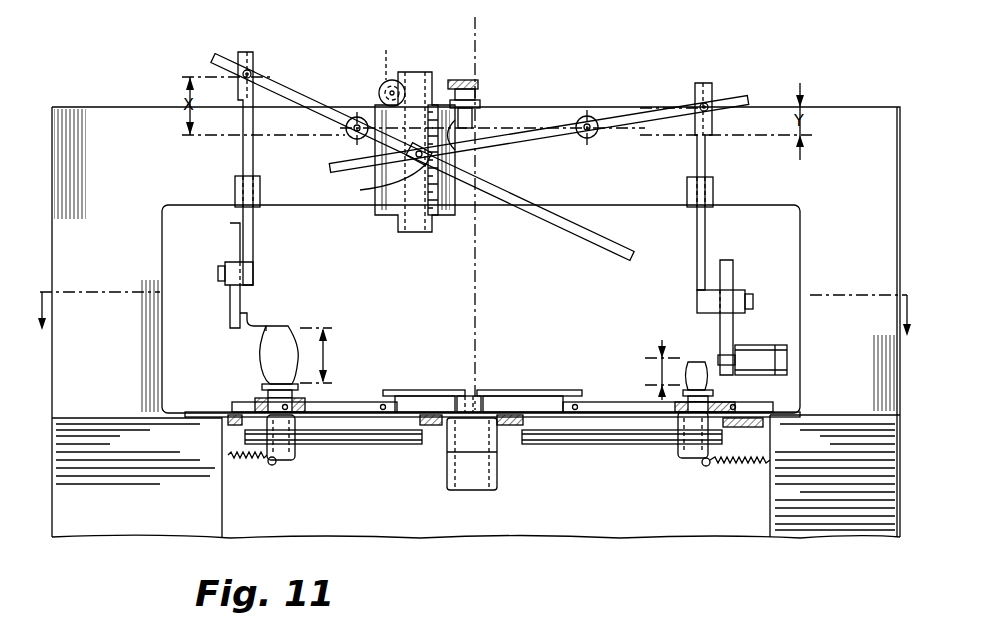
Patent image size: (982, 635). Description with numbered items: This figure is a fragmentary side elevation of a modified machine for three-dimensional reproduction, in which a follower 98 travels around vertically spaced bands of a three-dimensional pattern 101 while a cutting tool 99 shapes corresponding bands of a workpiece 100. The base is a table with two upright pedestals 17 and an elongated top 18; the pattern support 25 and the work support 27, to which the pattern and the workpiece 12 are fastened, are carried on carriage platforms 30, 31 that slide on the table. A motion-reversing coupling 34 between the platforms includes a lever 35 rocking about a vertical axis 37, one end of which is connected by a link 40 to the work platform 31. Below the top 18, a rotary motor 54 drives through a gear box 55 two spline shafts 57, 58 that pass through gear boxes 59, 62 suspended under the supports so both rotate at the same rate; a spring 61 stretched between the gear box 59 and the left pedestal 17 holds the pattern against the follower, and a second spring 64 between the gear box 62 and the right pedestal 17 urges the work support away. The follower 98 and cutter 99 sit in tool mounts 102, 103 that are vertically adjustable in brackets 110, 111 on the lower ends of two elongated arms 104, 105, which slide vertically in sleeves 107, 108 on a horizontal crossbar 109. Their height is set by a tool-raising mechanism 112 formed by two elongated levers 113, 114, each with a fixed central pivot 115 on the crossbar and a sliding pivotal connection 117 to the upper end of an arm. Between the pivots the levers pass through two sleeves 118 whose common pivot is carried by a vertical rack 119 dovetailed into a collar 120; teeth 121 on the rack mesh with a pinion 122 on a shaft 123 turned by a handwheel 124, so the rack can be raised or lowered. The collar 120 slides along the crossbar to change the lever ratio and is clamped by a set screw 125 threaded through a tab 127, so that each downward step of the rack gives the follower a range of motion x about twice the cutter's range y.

The workpiece 12 is at (474, 316).
The upright pedestals 17 is at (218, 521).
The elongated top 18 is at (755, 430).
The pattern support 25 is at (262, 392).
The work support 27 is at (682, 396).
The pattern-supporting carriage platform 30 is at (337, 403).
The work-supporting carriage platform 31 is at (600, 405).
The motion-reversing coupling 34 is at (480, 388).
The lever 35 is at (478, 418).
The axis 37 is at (490, 47).
The link 40 is at (440, 370).
The rotary motor 54 is at (452, 487).
The gear box 55 is at (497, 447).
The spline shaft 57 is at (342, 444).
The spline shaft 58 is at (565, 444).
The gear box 59 is at (280, 462).
The spring 61 is at (228, 453).
The gear box 62 is at (684, 460).
The second spring 64 is at (730, 464).
The follower 98 is at (257, 318).
The cutting tool 99 is at (702, 362).
The workpiece 100 is at (702, 378).
The three-dimensional pattern 101 is at (262, 352).
The tool mount 102 is at (228, 302).
The tool mount 103 is at (735, 323).
The elongated arm 104 is at (254, 233).
The elongated arm 105 is at (705, 236).
The sleeve 107 is at (259, 192).
The sleeve 108 is at (713, 190).
The horizontal crossbar 109 is at (555, 110).
The bracket 110 is at (229, 262).
The bracket 111 is at (742, 294).
The tool-raising mechanism 112 is at (571, 40).
The elongated lever 113 is at (549, 143).
The elongated lever 114 is at (302, 90).
The fixed central pivot 115 is at (345, 137).
The sliding pivotal connection 117 is at (252, 72).
The sleeves 118 is at (388, 183).
The vertical rack 119 is at (412, 80).
The collar 120 is at (447, 220).
The teeth 121 is at (400, 72).
The pinion 122 is at (375, 55).
The shaft 123 is at (379, 95).
The handwheel 124 is at (408, 98).
The set screw 125 is at (480, 85).
The tab 127 is at (508, 120).